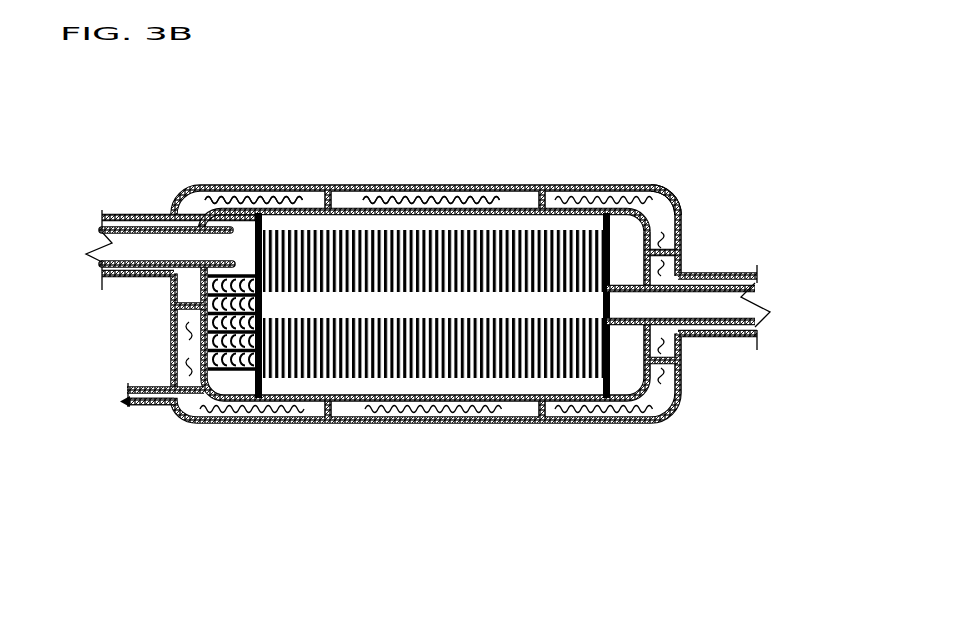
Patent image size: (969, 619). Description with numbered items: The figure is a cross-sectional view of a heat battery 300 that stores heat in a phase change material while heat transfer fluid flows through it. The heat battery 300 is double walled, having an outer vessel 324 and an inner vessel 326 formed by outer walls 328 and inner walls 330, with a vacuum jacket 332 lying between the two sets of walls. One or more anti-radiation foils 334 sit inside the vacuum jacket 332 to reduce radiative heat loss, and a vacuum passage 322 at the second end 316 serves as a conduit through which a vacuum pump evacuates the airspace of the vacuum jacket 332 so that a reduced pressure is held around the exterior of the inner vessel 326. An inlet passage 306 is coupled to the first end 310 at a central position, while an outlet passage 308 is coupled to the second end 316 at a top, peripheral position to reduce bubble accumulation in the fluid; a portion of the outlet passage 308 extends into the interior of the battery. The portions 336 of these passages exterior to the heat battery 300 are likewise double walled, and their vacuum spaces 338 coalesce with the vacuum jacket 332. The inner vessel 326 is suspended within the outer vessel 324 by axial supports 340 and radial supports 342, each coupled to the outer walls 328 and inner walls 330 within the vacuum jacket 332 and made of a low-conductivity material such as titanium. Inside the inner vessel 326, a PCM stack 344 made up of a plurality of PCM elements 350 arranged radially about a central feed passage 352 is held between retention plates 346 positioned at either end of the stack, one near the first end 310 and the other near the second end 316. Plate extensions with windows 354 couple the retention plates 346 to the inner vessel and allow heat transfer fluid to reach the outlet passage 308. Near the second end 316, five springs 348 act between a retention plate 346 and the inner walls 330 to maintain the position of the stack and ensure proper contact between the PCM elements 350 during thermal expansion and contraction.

The heat battery 300 is at (549, 87).
The inlet passage 306 is at (693, 313).
The outlet passage 308 is at (173, 256).
The first end 310 is at (719, 254).
The second end 316 is at (132, 324).
The vacuum passage 322 is at (157, 404).
The outer vessel 324 is at (688, 193).
The inner vessel 326 is at (674, 208).
The outer walls 328 is at (440, 183).
The inner walls 330 is at (420, 192).
The vacuum jacket 332 is at (192, 203).
The anti-radiation foils 334 is at (408, 193).
The portions 336 is at (150, 292).
The vacuum spaces 338 is at (140, 214).
The axial supports 340 is at (178, 338).
The radial supports 342 is at (333, 192).
The PCM stack 344 is at (362, 245).
The retention plates 346 is at (202, 228).
The springs 348 is at (222, 390).
The PCM elements 350 is at (313, 243).
The central feed passage 352 is at (446, 314).
The windows 354 is at (218, 209).